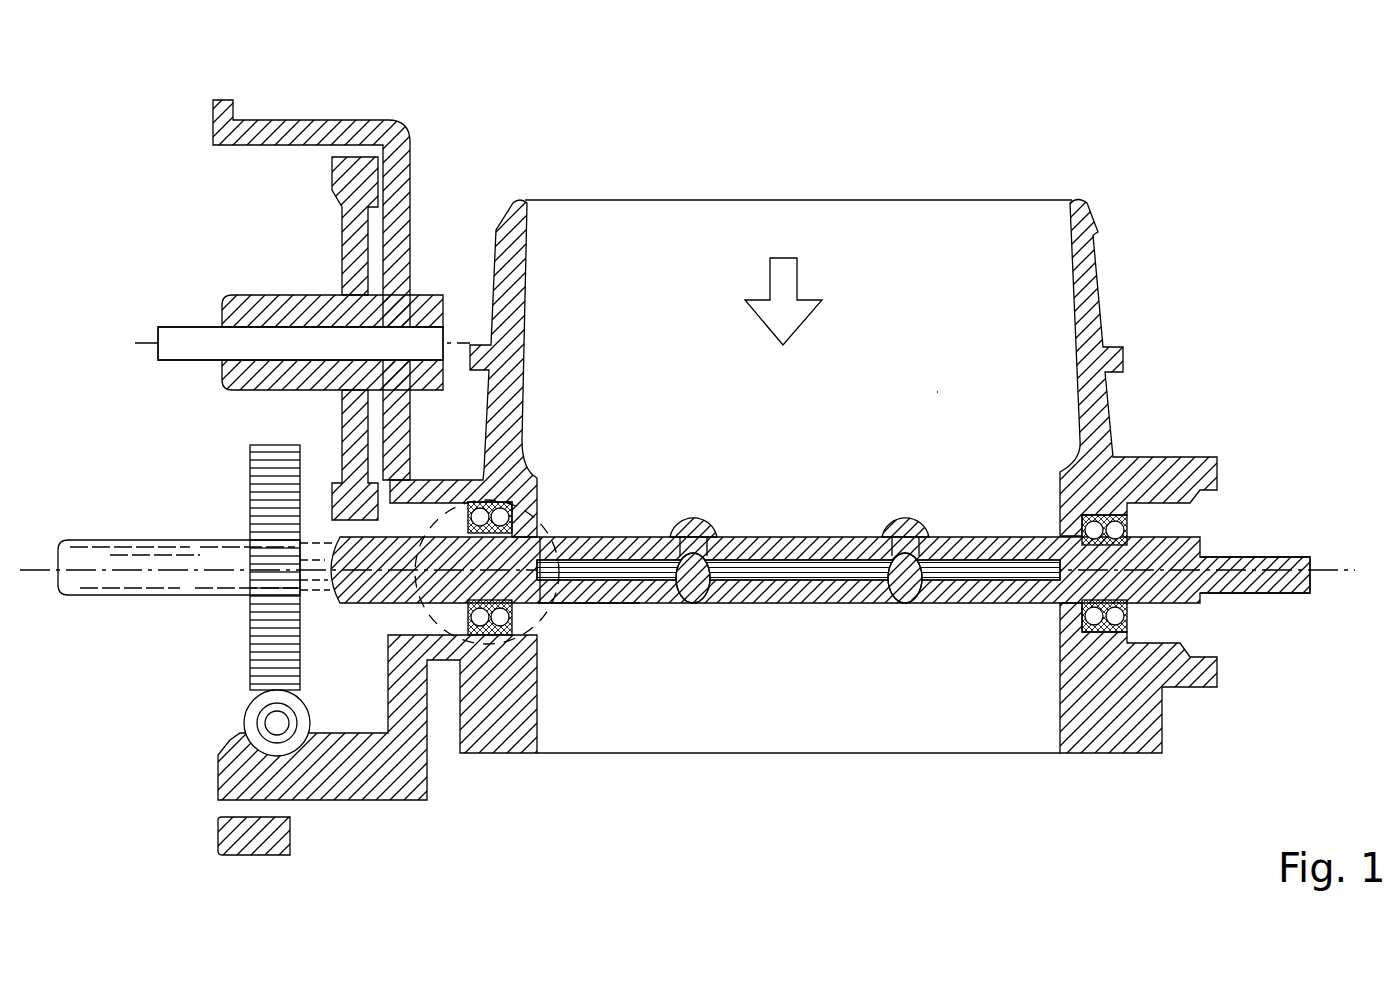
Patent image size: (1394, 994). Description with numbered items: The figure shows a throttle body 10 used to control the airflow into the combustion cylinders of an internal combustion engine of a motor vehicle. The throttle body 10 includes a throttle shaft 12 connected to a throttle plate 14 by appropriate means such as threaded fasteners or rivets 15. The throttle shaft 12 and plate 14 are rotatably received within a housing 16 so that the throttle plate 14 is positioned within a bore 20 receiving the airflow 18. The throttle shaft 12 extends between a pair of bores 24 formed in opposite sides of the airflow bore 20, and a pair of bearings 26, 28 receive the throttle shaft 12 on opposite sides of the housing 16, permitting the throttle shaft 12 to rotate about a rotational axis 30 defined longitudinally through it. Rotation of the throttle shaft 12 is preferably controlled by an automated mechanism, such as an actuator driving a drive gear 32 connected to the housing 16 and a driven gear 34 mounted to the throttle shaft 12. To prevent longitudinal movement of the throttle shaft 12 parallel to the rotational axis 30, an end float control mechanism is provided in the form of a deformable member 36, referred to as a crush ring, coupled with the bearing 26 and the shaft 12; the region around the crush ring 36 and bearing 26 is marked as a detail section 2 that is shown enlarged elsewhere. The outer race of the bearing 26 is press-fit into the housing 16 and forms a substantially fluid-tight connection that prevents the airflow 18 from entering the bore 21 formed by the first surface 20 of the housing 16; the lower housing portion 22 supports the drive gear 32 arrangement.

The throttle body 10 is at (958, 166).
The throttle shaft 12 is at (958, 603).
The throttle plate 14 is at (803, 605).
The rivets 15 is at (912, 525).
The housing 16 is at (1060, 678).
The airflow 18 is at (806, 272).
The bore 20 is at (1068, 279).
The bore 21 is at (862, 462).
The lower housing 22 is at (410, 635).
The bores 24 is at (635, 604).
The bearing 26 is at (452, 510).
The bearing 28 is at (1145, 620).
The rotational axis 30 is at (1320, 572).
The drive gear 32 is at (245, 722).
The gear 34 is at (250, 655).
The deformable member 36 is at (560, 540).
The section detail 2 is at (548, 626).